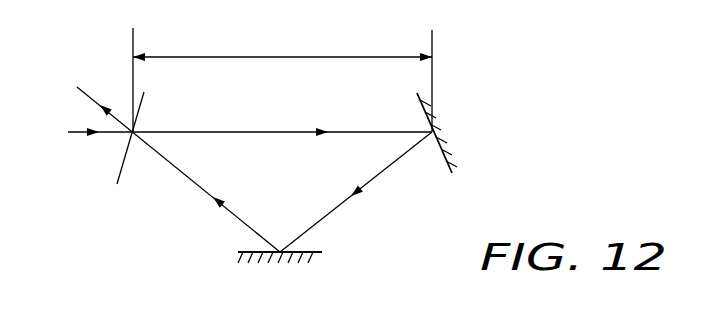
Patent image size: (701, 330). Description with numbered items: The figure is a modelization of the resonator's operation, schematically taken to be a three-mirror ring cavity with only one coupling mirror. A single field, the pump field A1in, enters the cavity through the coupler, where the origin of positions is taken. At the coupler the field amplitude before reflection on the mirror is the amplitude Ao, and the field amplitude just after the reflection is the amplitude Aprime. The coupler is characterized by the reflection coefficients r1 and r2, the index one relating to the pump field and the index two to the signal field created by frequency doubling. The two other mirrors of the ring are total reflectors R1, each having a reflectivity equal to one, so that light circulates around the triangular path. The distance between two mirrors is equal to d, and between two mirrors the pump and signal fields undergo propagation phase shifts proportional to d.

The distance between two mirrors d is at (282, 42).
The pump field A1in is at (82, 126).
The field amplitude after reflection Aprime is at (282, 114).
The field amplitude before reflection Ao is at (178, 169).
The reflection coefficient of the mirror for the pump field r1 is at (122, 159).
The reflection coefficient of the mirror for the signal field r2 is at (112, 251).
The total reflecting mirror R1 is at (371, 198).